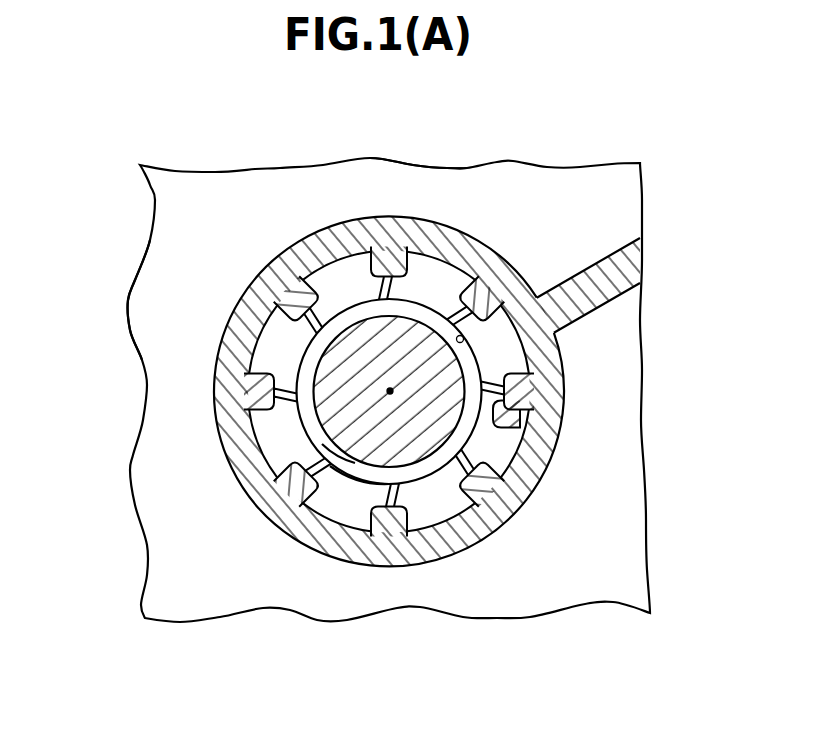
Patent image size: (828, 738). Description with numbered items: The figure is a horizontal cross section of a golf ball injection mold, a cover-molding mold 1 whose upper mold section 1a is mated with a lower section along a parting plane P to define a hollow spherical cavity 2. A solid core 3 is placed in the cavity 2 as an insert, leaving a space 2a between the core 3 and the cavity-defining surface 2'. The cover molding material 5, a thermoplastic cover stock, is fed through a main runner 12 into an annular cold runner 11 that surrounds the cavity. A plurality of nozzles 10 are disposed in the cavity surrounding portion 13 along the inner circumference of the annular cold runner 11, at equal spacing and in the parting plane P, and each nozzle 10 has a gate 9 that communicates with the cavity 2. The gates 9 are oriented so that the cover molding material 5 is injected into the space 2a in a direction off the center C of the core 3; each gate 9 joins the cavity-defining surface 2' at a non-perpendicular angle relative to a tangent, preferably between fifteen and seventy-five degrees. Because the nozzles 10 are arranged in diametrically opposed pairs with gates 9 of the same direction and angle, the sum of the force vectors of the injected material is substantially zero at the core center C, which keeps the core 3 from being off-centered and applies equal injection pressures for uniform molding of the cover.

The parting plane P is at (150, 293).
The cover-molding mold 1 is at (303, 163).
The upper mold section 1a is at (422, 163).
The hollow spherical cavity 2 is at (283, 391).
The space 2a is at (353, 473).
The cavity-defining surface 2' is at (577, 257).
The solid core 3 is at (419, 448).
The cover molding material 5 is at (351, 463).
The gate 9 is at (530, 427).
The nozzle 10 is at (388, 522).
The annular cold runner 11 is at (550, 372).
The main runner 12 is at (612, 272).
The cavity surrounding portion 13 is at (503, 446).
The center of the core C is at (391, 389).